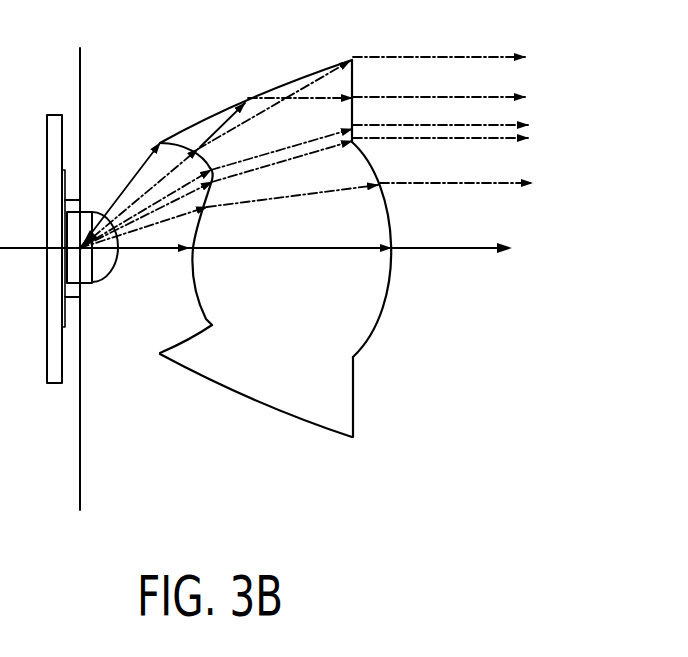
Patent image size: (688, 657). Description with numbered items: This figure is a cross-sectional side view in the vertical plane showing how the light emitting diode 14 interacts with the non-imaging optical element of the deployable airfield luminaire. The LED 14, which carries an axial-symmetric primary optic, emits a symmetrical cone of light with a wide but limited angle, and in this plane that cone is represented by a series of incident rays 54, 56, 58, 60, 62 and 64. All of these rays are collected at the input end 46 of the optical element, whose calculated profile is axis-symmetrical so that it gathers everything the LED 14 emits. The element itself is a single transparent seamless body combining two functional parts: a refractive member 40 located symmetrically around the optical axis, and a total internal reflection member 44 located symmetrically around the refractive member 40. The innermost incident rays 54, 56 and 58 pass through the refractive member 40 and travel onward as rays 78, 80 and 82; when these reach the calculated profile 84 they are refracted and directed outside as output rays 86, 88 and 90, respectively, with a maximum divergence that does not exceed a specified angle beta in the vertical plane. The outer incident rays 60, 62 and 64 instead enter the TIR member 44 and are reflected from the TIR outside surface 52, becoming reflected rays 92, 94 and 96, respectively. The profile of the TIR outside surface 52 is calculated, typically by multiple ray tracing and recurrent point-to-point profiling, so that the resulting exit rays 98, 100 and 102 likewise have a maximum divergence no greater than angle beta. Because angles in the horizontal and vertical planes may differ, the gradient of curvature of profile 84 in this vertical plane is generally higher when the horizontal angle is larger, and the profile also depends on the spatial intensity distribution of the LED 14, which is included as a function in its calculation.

The light emitting diode 14 is at (80, 267).
The refractive member 40 is at (303, 313).
The total internal reflection member 44 is at (314, 400).
The input end 46 is at (212, 323).
The TIR outside surface 52 is at (225, 108).
The incident ray 54 is at (167, 250).
The incident ray 56 is at (185, 209).
The incident ray 58 is at (218, 180).
The incident ray 60 is at (165, 190).
The incident ray 62 is at (135, 193).
The incident ray 64 is at (117, 207).
The refracted ray 78 is at (298, 252).
The refracted ray 80 is at (284, 197).
The refracted ray 82 is at (278, 158).
The calculated profile 84 is at (383, 302).
The output ray 86 is at (450, 249).
The output ray 88 is at (458, 184).
The output ray 90 is at (443, 139).
The reflected ray 92 is at (280, 93).
The reflected ray 94 is at (313, 97).
The reflected ray 96 is at (260, 133).
The output ray 98 is at (468, 53).
The output ray 100 is at (487, 97).
The output ray 102 is at (442, 125).